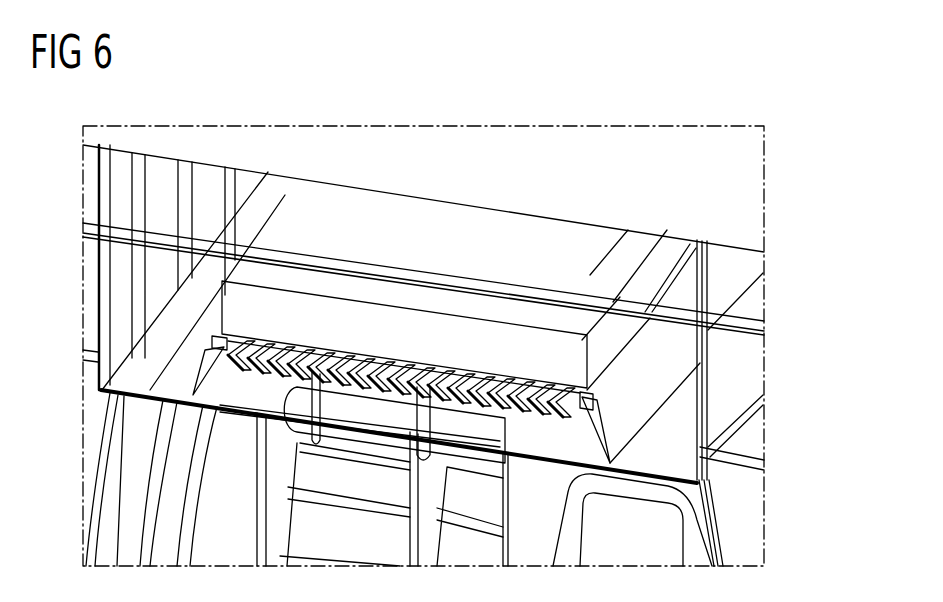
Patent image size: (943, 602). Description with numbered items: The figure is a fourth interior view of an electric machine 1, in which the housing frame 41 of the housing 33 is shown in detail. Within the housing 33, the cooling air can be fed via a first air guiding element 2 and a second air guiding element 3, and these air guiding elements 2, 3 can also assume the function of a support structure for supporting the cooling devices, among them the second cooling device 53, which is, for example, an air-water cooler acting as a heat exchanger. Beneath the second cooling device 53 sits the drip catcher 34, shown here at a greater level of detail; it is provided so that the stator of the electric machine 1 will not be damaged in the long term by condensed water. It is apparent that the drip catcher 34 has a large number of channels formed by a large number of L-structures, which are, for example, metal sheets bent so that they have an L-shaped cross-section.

The electric machine 1 is at (800, 138).
The first air guiding element 2 is at (645, 392).
The second air guiding element 3 is at (196, 360).
The housing 33 is at (627, 150).
The drip catcher 34 is at (374, 362).
The housing frame 41 is at (523, 293).
The second cooling device 53 is at (456, 237).